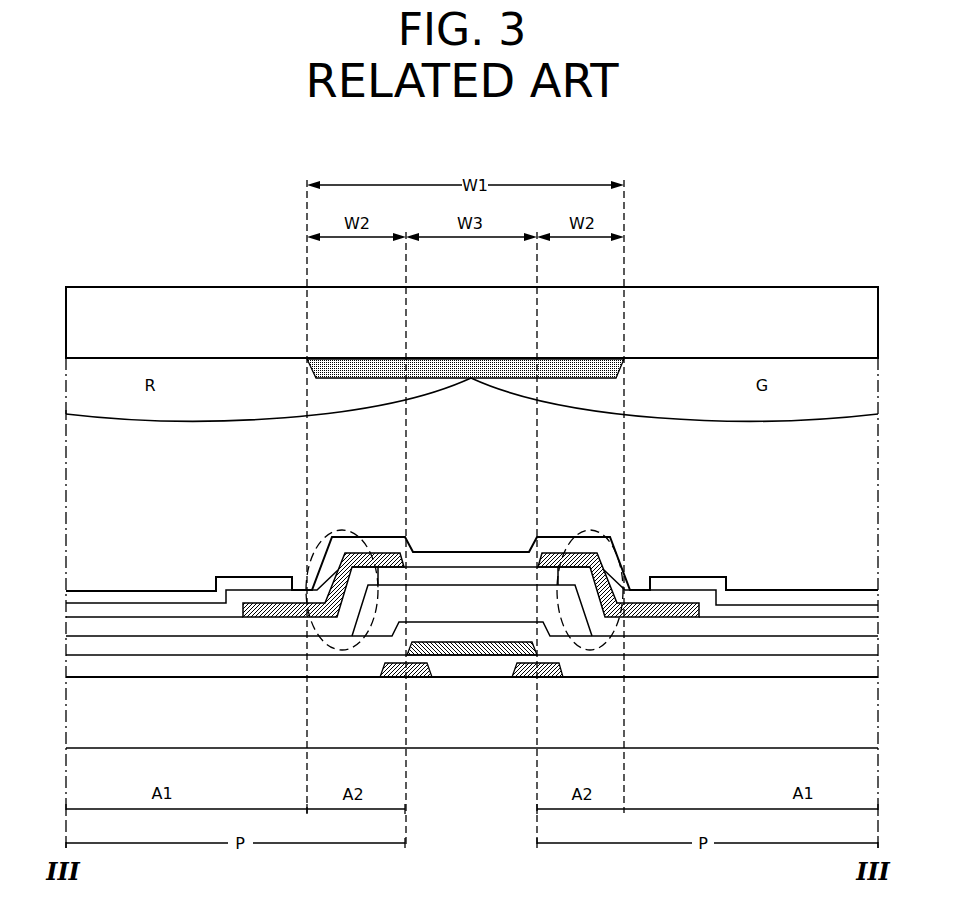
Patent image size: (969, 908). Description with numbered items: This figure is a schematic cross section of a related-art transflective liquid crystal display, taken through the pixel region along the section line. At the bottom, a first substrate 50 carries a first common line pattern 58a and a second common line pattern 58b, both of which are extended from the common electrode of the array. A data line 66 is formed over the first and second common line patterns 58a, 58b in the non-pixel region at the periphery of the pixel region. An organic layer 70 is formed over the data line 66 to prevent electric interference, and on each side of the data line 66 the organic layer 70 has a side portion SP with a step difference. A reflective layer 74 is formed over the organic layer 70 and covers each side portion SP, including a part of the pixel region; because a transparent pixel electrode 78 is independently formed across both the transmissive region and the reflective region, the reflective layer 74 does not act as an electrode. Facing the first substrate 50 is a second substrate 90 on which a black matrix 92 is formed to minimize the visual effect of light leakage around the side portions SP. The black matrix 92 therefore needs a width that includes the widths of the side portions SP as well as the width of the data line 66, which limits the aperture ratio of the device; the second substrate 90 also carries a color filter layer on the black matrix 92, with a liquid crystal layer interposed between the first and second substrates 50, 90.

The second substrate 90 is at (812, 327).
The black matrix 92 is at (470, 379).
The transparent pixel electrode 78 is at (157, 593).
The reflective layer 74 is at (307, 600).
The organic layer 70 is at (473, 608).
The data line 66 is at (473, 656).
The first common line pattern 58a is at (378, 679).
The second common line pattern 58b is at (549, 678).
The first substrate 50 is at (810, 725).
The side portion SP is at (343, 530).